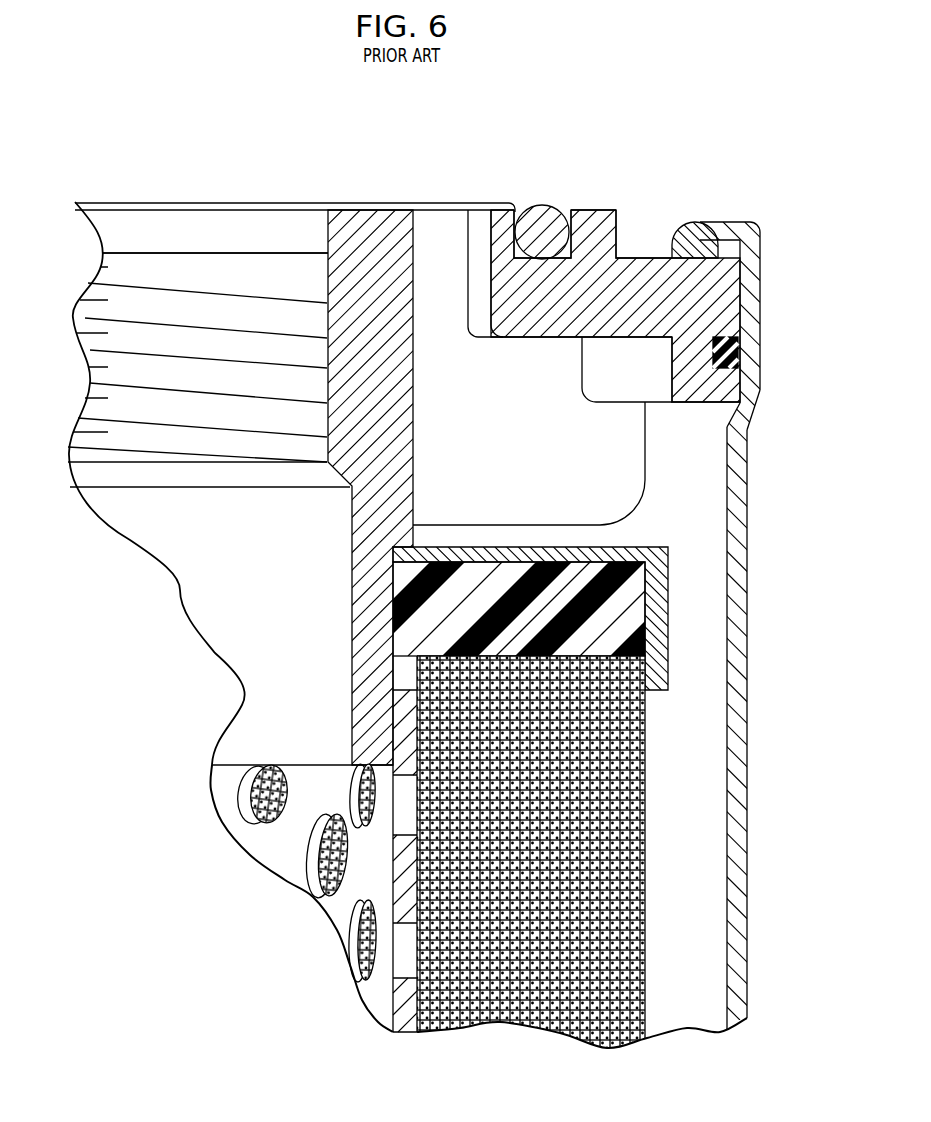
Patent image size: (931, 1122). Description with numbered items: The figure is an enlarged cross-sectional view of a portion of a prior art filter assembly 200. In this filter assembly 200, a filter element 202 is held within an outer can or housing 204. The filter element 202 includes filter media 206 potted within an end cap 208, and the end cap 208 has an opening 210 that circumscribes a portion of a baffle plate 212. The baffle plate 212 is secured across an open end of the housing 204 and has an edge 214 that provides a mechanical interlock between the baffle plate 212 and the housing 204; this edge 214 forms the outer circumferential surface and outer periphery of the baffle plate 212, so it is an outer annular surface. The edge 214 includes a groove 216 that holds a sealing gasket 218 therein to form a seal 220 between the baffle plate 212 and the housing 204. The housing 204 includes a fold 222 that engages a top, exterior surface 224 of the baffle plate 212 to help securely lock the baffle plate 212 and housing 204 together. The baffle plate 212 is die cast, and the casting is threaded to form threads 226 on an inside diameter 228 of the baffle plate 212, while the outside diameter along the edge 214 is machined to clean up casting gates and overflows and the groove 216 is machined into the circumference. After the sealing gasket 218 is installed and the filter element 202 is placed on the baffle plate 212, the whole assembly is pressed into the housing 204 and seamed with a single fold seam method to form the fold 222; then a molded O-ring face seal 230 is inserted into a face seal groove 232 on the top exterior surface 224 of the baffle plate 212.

The filter assembly 200 is at (108, 148).
The filter element 202 is at (680, 813).
The housing 204 is at (747, 913).
The filter media 206 is at (645, 977).
The end cap 208 is at (668, 582).
The opening 210 is at (393, 598).
The baffle plate 212 is at (391, 238).
The edge 214 is at (760, 268).
The groove 216 is at (742, 339).
The sealing gasket 218 is at (742, 367).
The seal 220 is at (735, 357).
The fold 222 is at (690, 240).
The top exterior surface 224 is at (638, 258).
The threads 226 is at (212, 326).
The inside diameter 228 is at (148, 253).
The O-ring face seal 230 is at (487, 205).
The face seal groove 232 is at (568, 220).